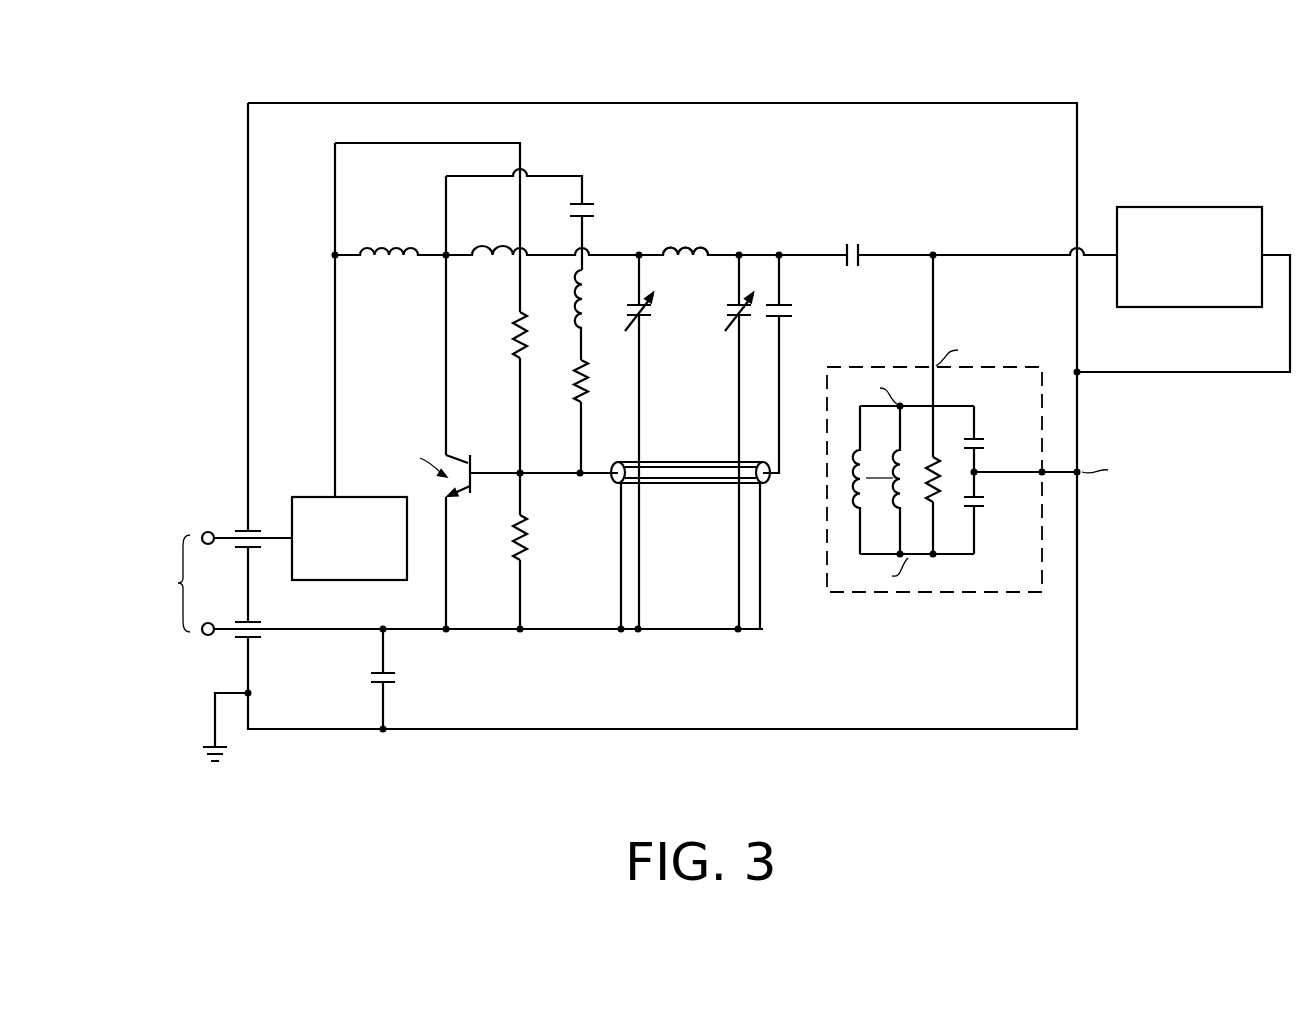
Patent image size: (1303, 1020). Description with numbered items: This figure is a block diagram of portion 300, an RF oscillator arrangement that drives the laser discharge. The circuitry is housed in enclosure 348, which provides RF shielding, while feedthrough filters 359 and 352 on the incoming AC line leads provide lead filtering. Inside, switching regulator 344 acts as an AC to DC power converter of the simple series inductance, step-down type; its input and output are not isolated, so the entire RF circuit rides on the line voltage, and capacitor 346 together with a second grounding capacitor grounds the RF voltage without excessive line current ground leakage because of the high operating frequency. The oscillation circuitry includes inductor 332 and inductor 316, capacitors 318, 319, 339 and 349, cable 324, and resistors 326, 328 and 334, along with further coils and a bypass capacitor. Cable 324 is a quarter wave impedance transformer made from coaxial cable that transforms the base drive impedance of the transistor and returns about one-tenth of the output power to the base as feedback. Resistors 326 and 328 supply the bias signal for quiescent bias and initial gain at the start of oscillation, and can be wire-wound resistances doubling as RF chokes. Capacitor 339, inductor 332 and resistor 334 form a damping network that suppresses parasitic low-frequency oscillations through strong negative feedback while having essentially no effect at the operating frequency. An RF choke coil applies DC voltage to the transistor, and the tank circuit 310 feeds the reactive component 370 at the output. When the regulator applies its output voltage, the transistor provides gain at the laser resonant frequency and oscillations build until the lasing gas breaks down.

The portion 300 is at (684, 52).
The tank circuit 310 is at (925, 596).
The inductor 316 is at (680, 243).
The capacitor 318 is at (648, 320).
The capacitor 319 is at (725, 308).
The cable 324 is at (660, 487).
The resistor 326 is at (534, 534).
The resistor 328 is at (512, 360).
The inductor 332 is at (576, 312).
The resistor 334 is at (572, 384).
The capacitor 339 is at (596, 204).
The switching regulator 344 is at (358, 497).
The capacitor 346 is at (395, 680).
The enclosure 348 is at (765, 733).
The capacitor 349 is at (790, 317).
The filter 352 is at (258, 638).
The filter 359 is at (240, 530).
The reactive component 370 is at (1175, 205).